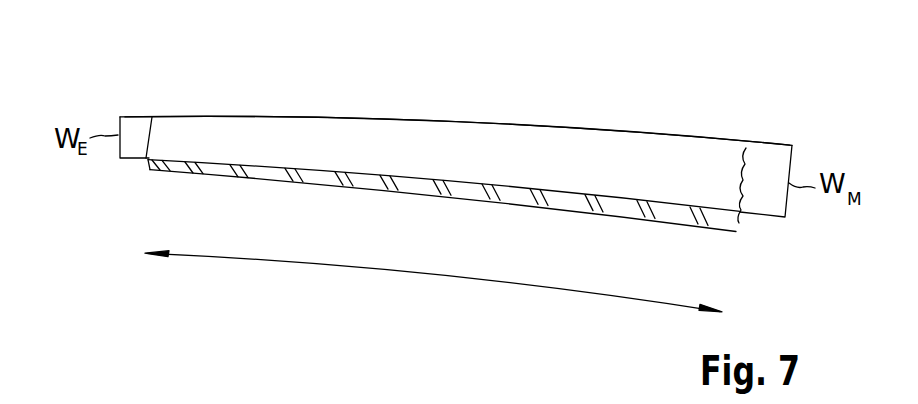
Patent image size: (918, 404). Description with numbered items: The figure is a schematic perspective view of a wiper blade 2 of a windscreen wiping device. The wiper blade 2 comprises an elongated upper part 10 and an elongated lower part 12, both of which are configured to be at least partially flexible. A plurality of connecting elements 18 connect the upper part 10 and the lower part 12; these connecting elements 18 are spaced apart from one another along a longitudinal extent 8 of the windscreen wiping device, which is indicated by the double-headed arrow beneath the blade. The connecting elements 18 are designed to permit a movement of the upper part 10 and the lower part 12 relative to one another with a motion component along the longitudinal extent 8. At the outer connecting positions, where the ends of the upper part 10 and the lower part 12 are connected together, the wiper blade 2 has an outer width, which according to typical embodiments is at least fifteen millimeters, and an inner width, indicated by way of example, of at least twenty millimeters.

The wiper blade 2 is at (417, 119).
The longitudinal extent 8 is at (427, 275).
The elongated upper part 10 is at (584, 127).
The elongated lower part 12 is at (625, 217).
The connecting elements 18 is at (440, 196).